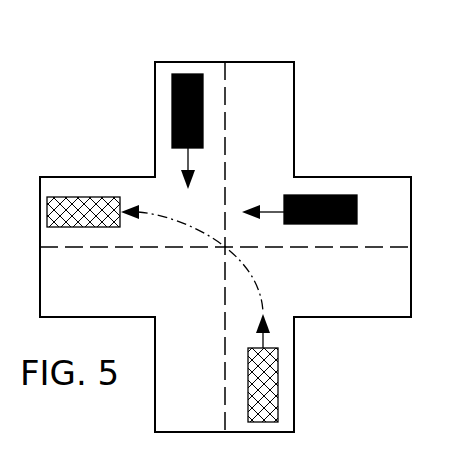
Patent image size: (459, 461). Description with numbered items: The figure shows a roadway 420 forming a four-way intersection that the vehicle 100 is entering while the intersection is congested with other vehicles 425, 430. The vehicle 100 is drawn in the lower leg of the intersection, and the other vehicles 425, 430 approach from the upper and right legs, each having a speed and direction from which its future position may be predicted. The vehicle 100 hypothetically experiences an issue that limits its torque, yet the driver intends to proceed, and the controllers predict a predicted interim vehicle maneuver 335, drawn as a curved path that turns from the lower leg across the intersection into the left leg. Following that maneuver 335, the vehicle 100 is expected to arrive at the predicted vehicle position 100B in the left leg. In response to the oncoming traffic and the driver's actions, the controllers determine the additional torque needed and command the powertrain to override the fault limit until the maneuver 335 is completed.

The roadway 420 is at (133, 92).
The other vehicle 425 is at (203, 100).
The other vehicle 430 is at (329, 195).
The predicted vehicle position 100B is at (60, 197).
The vehicle 100 is at (278, 372).
The predicted interim vehicle maneuver 335 is at (236, 257).